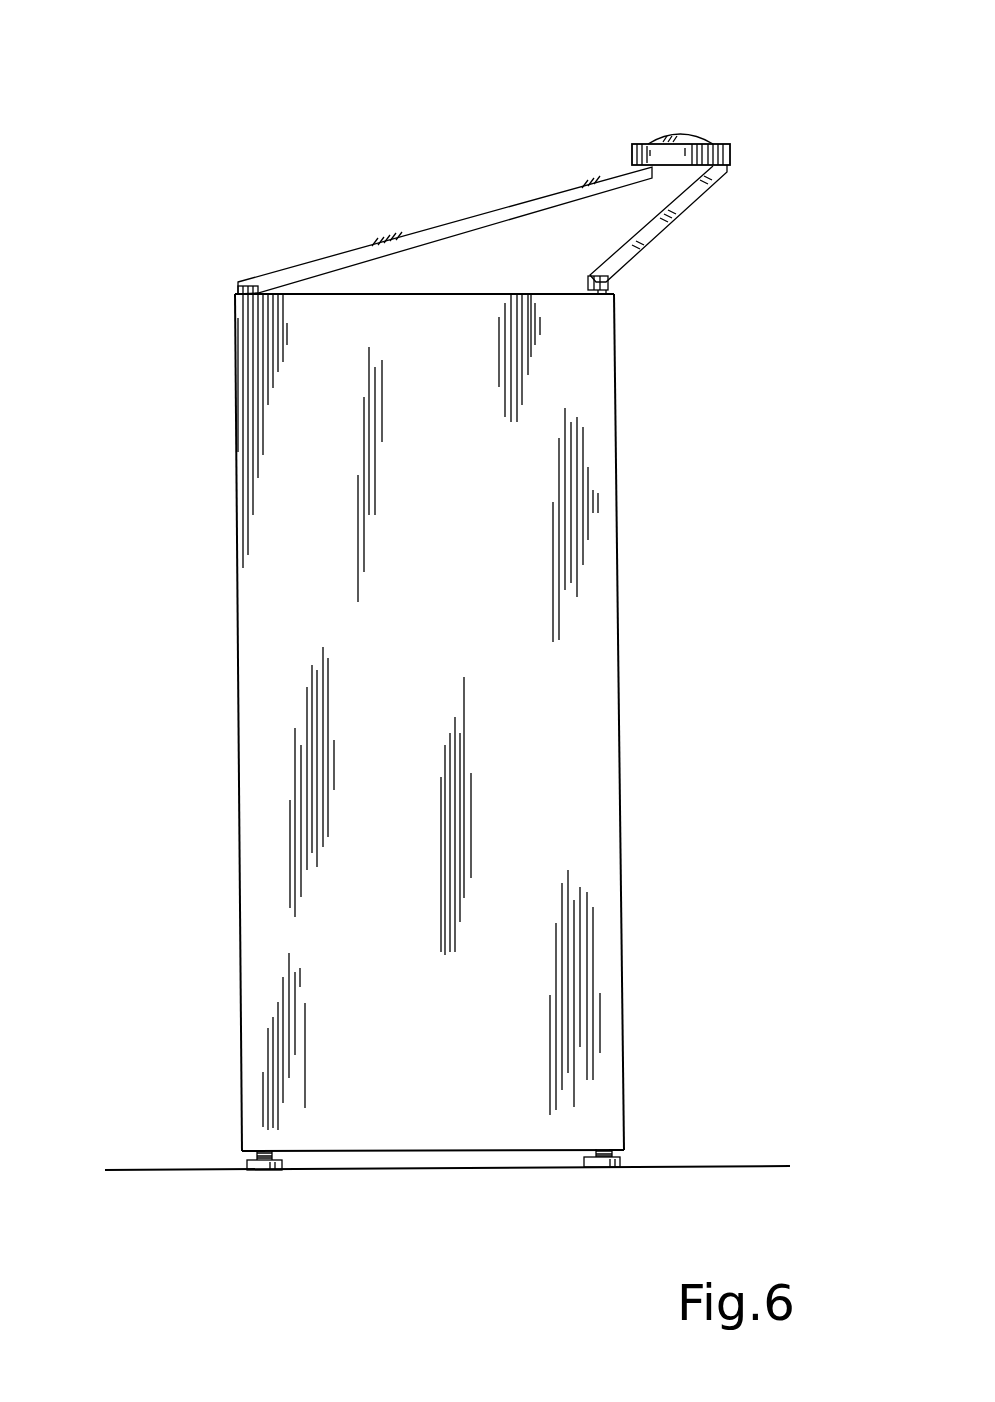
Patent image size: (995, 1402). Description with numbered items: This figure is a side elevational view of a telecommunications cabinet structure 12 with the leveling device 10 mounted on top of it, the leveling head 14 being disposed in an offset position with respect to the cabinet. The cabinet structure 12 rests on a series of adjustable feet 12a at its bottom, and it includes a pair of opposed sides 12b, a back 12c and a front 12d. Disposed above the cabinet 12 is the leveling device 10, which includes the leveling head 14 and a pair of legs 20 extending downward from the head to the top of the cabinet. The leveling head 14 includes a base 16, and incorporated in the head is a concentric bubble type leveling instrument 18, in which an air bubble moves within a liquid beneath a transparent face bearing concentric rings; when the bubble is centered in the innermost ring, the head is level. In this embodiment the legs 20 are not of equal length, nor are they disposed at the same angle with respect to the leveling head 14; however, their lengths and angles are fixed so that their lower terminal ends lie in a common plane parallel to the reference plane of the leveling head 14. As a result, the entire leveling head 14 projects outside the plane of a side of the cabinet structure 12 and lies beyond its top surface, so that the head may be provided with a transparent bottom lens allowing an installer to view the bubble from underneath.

The leveling device 10 is at (270, 235).
The cabinet structure 12 is at (165, 657).
The adjustable feet 12a is at (257, 1165).
The opposed sides 12b is at (280, 792).
The back 12c is at (236, 580).
The front 12d is at (620, 680).
The leveling head 14 is at (733, 102).
The base 16 is at (733, 155).
The concentric bubble type leveling instrument 18 is at (685, 137).
The legs 20 is at (478, 190).